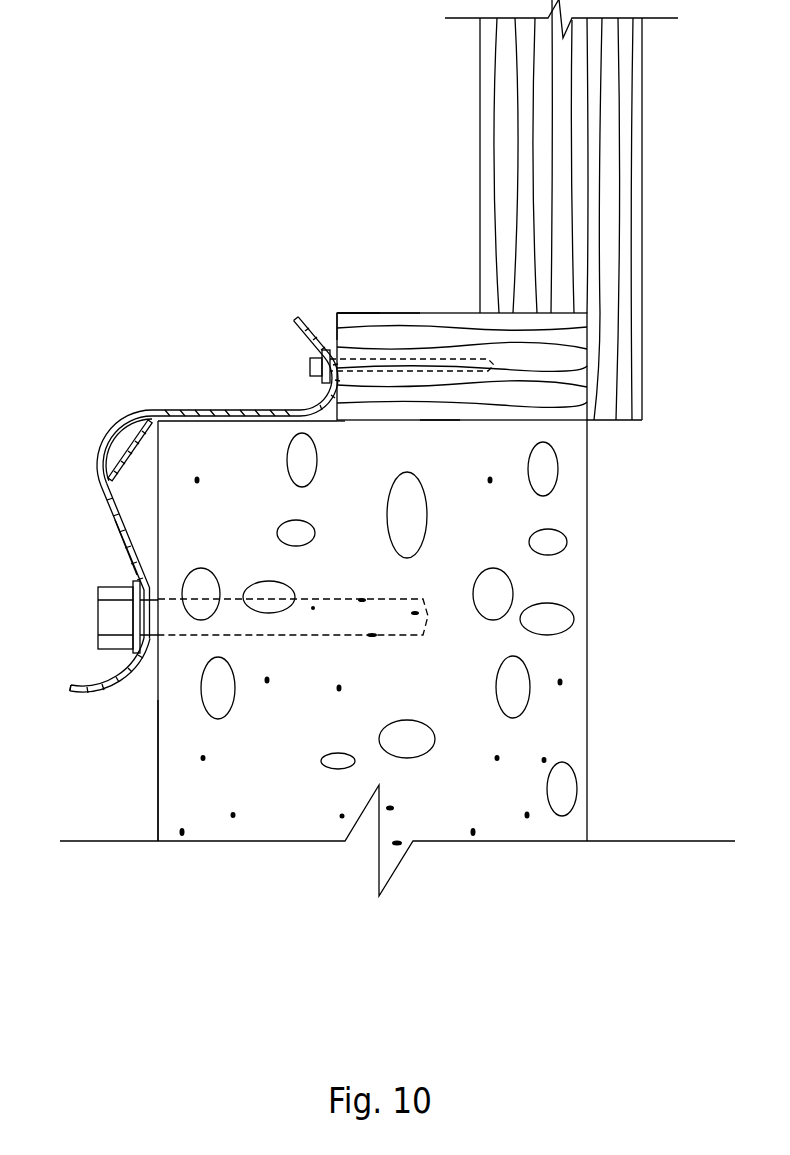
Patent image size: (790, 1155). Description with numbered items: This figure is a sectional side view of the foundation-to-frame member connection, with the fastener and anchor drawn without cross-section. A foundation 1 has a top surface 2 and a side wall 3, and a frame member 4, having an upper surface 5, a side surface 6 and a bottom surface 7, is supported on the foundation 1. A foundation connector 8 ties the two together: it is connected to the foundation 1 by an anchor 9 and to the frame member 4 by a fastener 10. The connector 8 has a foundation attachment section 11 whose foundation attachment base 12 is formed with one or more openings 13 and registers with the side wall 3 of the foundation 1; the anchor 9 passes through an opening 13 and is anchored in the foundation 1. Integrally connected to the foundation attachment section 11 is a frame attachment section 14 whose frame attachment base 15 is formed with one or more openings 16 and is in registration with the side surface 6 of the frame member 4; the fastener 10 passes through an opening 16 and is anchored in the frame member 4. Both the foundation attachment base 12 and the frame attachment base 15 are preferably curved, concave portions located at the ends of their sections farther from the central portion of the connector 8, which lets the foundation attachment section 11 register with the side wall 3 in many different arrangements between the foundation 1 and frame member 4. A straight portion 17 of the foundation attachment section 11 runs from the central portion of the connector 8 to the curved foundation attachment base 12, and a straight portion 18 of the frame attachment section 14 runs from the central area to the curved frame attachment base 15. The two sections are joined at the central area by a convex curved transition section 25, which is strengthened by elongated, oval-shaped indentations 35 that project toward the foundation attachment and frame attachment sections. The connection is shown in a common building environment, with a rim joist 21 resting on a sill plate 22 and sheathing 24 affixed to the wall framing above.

The foundation 1 is at (587, 573).
The top surface 2 is at (350, 427).
The side wall 3 is at (158, 790).
The frame member 4 is at (362, 313).
The upper surface 5 is at (403, 280).
The side surface 6 is at (336, 322).
The bottom surface 7 is at (437, 427).
The foundation connector 8 is at (88, 693).
The anchors 9 is at (307, 597).
The fasteners 10 is at (412, 358).
The foundation attachment section 11 is at (124, 557).
The foundation attachment base 12 is at (108, 676).
The openings 13 is at (142, 662).
The frame attachment section 14 is at (181, 537).
The frame attachment base 15 is at (310, 340).
The openings 16 is at (310, 398).
The straight portion 17 is at (130, 527).
The straight portion 18 is at (220, 427).
The rim joist 21 is at (478, 115).
The sill plate 22 is at (587, 346).
The sheathing 24 is at (642, 133).
The curved transition section 25 is at (140, 414).
The indentations 35 is at (125, 440).